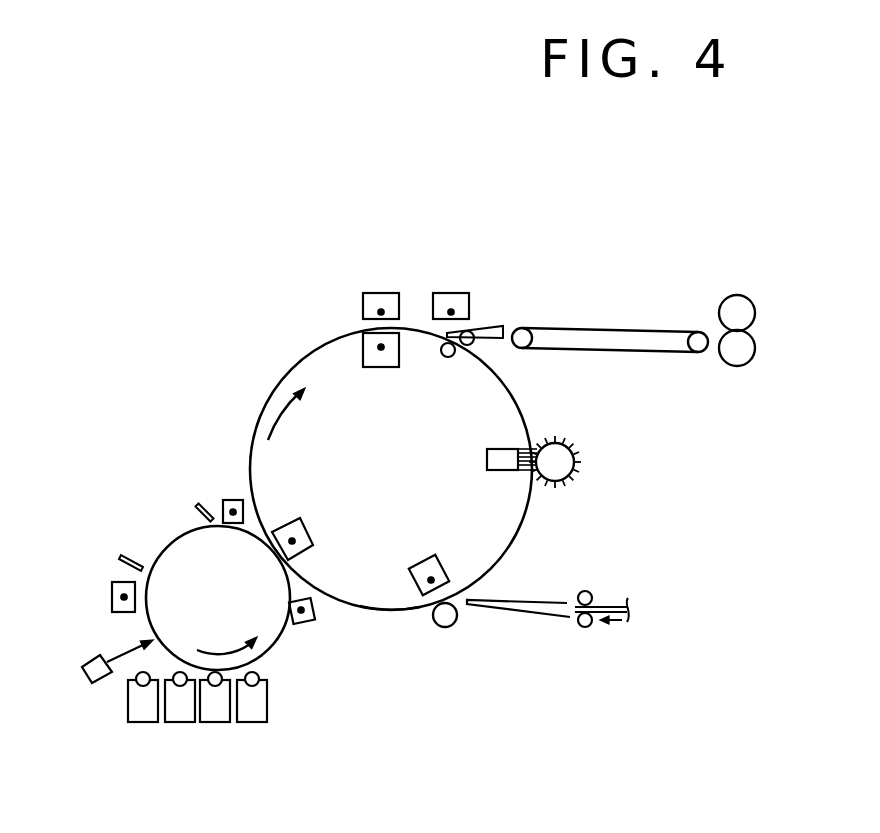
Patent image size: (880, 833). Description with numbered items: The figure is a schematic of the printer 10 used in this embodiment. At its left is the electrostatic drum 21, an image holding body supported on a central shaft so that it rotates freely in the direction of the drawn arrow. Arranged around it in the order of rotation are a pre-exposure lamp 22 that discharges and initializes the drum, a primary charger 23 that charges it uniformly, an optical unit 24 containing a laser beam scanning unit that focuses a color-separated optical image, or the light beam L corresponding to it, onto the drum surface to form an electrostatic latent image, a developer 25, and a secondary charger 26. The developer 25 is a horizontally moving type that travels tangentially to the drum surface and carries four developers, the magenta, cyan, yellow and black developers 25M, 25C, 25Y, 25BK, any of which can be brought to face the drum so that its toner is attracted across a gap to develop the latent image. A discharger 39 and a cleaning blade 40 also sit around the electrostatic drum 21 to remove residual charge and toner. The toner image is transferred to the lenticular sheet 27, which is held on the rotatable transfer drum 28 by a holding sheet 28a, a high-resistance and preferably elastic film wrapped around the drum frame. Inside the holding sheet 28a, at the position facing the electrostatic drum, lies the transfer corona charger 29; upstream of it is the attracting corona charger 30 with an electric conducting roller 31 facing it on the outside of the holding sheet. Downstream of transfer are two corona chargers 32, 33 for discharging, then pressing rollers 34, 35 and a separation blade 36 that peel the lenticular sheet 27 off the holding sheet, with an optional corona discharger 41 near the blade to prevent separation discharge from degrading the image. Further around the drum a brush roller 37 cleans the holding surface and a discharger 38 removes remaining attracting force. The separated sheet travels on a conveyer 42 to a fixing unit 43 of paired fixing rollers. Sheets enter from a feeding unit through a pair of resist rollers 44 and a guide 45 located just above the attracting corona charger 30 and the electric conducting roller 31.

The printer 10 is at (102, 193).
The electrostatic drum 21 is at (173, 538).
The pre-exposure lamp 22 is at (120, 558).
The primary charger 23 is at (112, 597).
The optical unit 24 is at (85, 664).
The light beam L is at (115, 641).
The developer 25 is at (200, 739).
The black developer 25BK is at (128, 710).
The yellow developer 25Y is at (177, 722).
The cyan developer 25C is at (214, 722).
The magenta developer 25M is at (250, 722).
The secondary charger 26 is at (315, 618).
The lenticular sheet 27 is at (605, 605).
The transfer drum 28 is at (300, 358).
The holding sheet 28a is at (387, 612).
The transfer corona charger 29 is at (307, 533).
The attracting corona charger 30 is at (430, 560).
The electric conducting roller 31 is at (452, 628).
The corona charger 32 is at (381, 293).
The corona charger 33 is at (381, 367).
The pressing roller 34 is at (472, 345).
The pressing roller 35 is at (448, 357).
The separation blade 36 is at (497, 325).
The brush roller 37 is at (576, 447).
The discharger 38 is at (487, 462).
The discharger 39 is at (233, 500).
The cleaning blade 40 is at (197, 505).
The corona discharger 41 is at (452, 293).
The conveyer 42 is at (628, 329).
The fixing unit 43 is at (743, 298).
The resist rollers 44 is at (588, 590).
The guide 45 is at (507, 610).